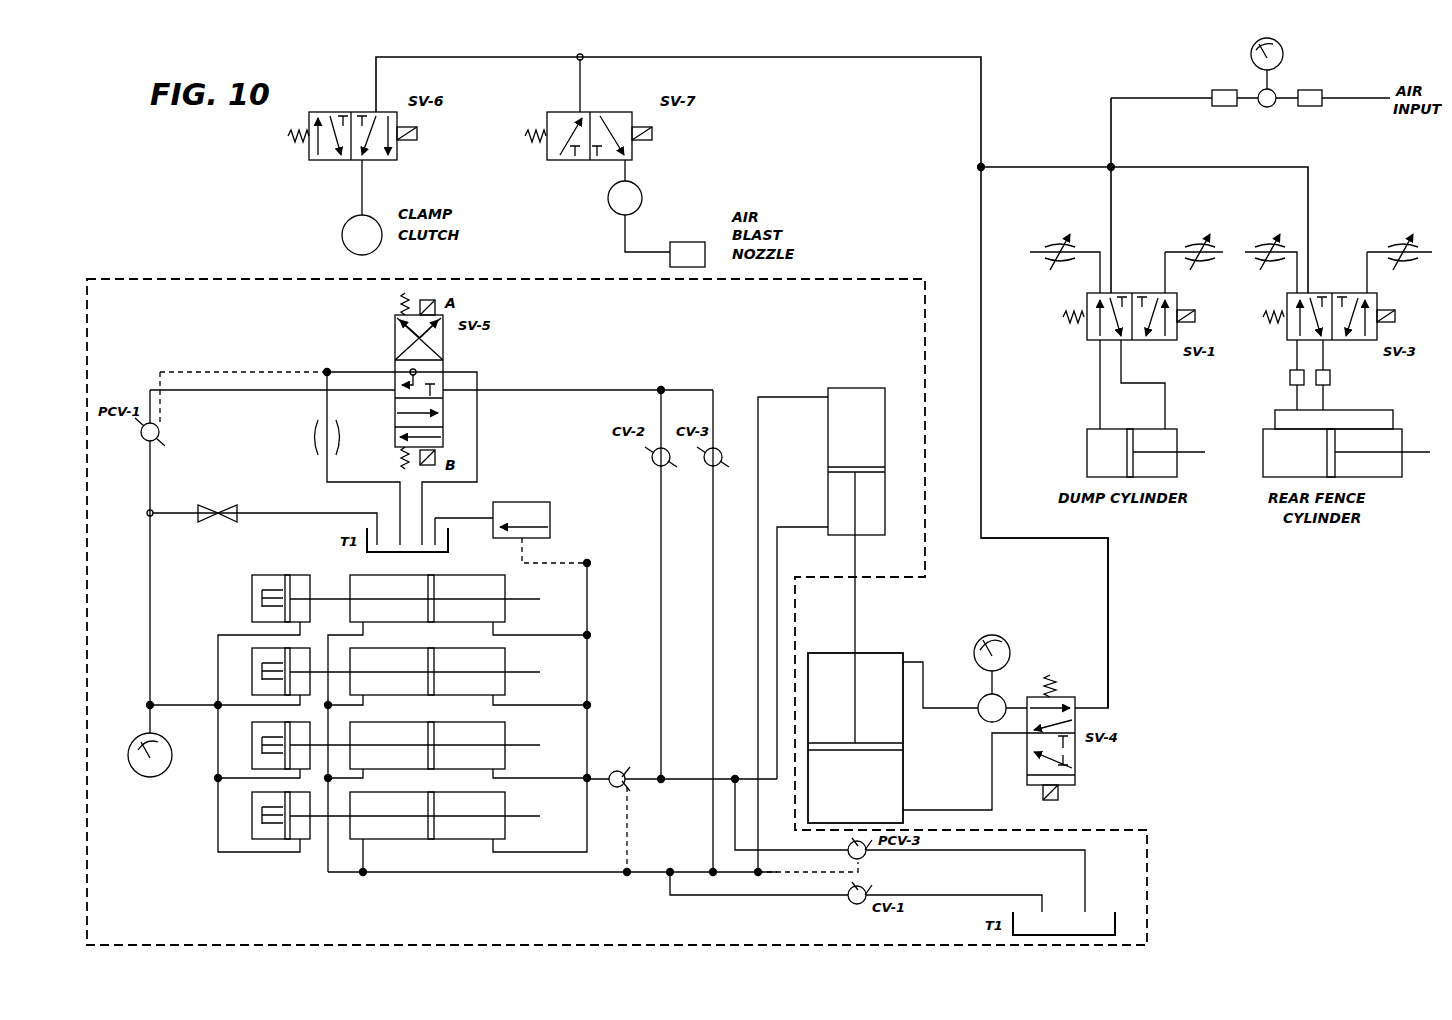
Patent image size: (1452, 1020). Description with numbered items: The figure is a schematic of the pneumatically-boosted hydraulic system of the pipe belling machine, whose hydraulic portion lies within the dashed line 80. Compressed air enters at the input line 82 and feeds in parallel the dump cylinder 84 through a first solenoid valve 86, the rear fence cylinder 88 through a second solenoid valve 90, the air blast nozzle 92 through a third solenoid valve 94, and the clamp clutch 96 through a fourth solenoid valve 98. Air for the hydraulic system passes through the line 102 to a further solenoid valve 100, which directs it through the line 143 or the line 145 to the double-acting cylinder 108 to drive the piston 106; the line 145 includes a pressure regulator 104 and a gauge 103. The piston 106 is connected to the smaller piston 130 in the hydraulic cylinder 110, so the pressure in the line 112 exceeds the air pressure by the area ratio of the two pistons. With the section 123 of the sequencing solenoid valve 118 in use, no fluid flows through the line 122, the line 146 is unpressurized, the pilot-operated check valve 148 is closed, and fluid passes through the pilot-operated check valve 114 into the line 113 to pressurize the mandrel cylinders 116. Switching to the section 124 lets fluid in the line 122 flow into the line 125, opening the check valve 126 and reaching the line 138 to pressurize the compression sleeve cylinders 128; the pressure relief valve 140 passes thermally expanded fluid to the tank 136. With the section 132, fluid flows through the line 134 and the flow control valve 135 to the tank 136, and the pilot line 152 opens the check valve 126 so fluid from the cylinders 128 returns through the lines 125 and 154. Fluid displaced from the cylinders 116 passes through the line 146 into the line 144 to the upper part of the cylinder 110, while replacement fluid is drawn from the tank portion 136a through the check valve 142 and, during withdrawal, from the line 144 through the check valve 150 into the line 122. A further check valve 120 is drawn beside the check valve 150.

The dashed line 80 is at (190, 279).
The input line 82 is at (1352, 98).
The dump cylinder 84 is at (1178, 430).
The solenoid valve SV-1 86 is at (1178, 296).
The rear fence cylinder 88 is at (1397, 425).
The solenoid valve SV-3 90 is at (1380, 298).
The air blast nozzle 92 is at (695, 240).
The solenoid valve SV-7 94 is at (565, 162).
The clamp clutch 96 is at (342, 234).
The solenoid valve SV-6 98 is at (395, 162).
The solenoid valve SV-4 100 is at (1077, 765).
The line 102 is at (1108, 578).
The gauge 103 is at (1003, 637).
The pressure regulator 104 is at (998, 700).
The piston 106 is at (885, 746).
The cylinder 108 is at (868, 653).
The hydraulic cylinder 110 is at (868, 390).
The line 112 is at (800, 526).
The line 113 is at (597, 778).
The pilot-operated check valve PCV-2 114 is at (612, 790).
The cylinders 116 is at (404, 850).
The solenoid valve SV-5 118 is at (450, 368).
The check valve CV-2 120 is at (652, 464).
The line 122 is at (582, 390).
The section 123 is at (396, 389).
The section 124 is at (395, 428).
The line 125 is at (206, 393).
The pilot-operated check valve PCV-1 126 is at (140, 444).
The cylinders 128 is at (298, 570).
The piston 130 is at (868, 467).
The section 132 is at (395, 334).
The line 134 is at (327, 395).
The flow control valve 135 is at (340, 447).
The tank T-1 136 is at (388, 518).
The tank T-1 136a is at (1100, 926).
The line 138 is at (175, 705).
The pressure relief valve 140 is at (522, 503).
The check valve 142 is at (848, 900).
The line 143 is at (945, 815).
The line 144 is at (795, 395).
The line 145 is at (946, 708).
The line 146 is at (452, 874).
The pilot-operated check valve PCV-3 148 is at (870, 857).
The check valve CV-3 150 is at (705, 466).
The pilot line 152 is at (277, 370).
The line 154 is at (478, 452).